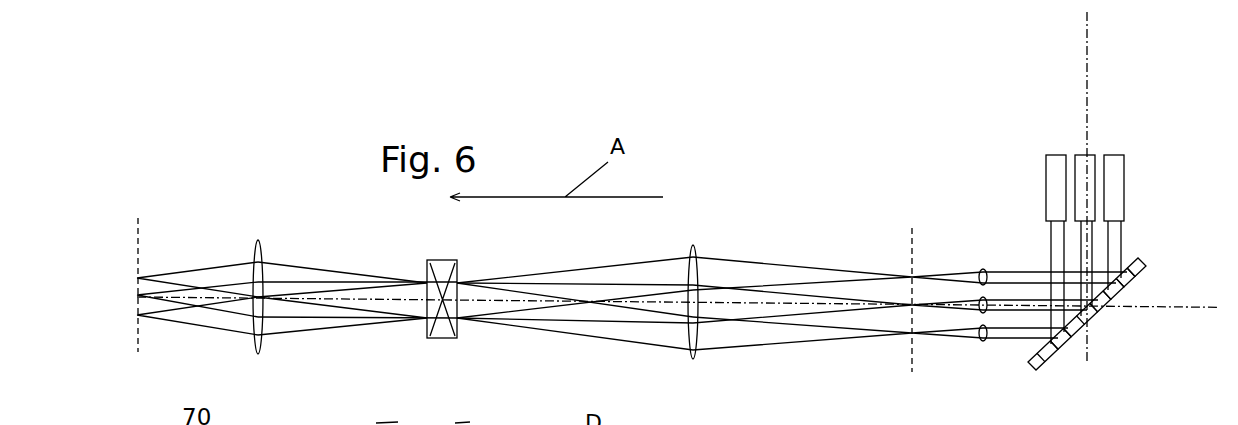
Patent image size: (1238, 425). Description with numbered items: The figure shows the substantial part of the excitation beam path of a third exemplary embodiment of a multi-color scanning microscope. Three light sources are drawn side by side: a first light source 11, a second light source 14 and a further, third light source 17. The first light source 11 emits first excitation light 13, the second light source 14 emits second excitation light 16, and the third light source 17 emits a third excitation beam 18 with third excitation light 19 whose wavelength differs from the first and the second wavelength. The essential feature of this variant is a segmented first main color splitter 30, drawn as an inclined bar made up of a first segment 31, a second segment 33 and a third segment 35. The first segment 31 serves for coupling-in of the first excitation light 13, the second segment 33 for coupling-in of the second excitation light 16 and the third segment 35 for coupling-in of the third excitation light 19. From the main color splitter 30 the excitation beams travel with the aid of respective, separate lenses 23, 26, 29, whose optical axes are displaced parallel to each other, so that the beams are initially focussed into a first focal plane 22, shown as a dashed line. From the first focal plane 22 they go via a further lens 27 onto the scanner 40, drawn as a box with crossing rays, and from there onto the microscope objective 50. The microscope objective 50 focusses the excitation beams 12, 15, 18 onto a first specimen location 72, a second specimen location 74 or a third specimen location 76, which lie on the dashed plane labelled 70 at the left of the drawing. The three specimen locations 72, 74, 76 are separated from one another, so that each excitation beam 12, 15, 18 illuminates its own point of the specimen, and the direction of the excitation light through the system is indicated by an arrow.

The object plane 70 is at (138, 218).
The first specimen location 72 is at (137, 276).
The second specimen location 74 is at (137, 295).
The third specimen location 76 is at (137, 315).
The first excitation beam 12 is at (232, 268).
The second excitation beam 15 is at (200, 304).
The third excitation beam 18 is at (238, 327).
The microscope objective 50 is at (258, 276).
The scanner 40 is at (442, 270).
The further lens 27 is at (690, 272).
The first focal plane 22 is at (910, 240).
The lens 29 is at (987, 273).
The lens 26 is at (977, 302).
The lens 23 is at (978, 342).
The first light source 11 is at (1058, 205).
The second light source 14 is at (1085, 168).
The third light source 17 is at (1117, 203).
The first excitation light 13 is at (1057, 248).
The second excitation light 16 is at (1090, 253).
The third excitation light 19 is at (1113, 233).
The main color splitter 30 is at (1038, 362).
The first segment 31 is at (1060, 342).
The second segment 33 is at (1095, 313).
The third segment 35 is at (1117, 288).